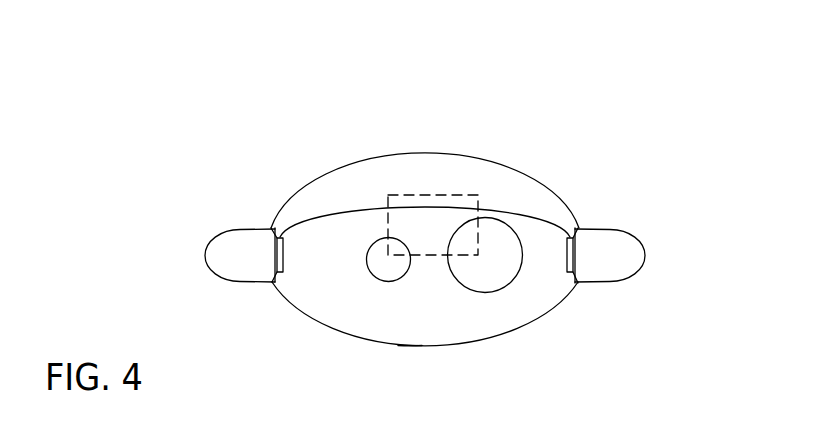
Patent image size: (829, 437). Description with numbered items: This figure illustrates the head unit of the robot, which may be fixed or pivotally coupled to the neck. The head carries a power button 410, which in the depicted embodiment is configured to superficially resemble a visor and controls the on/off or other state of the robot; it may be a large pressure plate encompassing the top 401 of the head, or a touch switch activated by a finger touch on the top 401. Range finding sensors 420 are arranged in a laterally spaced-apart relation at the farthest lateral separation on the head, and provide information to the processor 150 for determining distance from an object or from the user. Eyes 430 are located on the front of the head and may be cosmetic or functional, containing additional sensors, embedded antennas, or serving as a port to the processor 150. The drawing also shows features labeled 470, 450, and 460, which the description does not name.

The top 401 is at (421, 232).
The power button 410 is at (420, 184).
The processor 150 is at (452, 194).
The display band 470 is at (350, 197).
The range finding sensors 420 is at (237, 230).
The eyes 430 is at (395, 262).
The lower housing portion 450 is at (357, 308).
The bottom port 460 is at (410, 346).